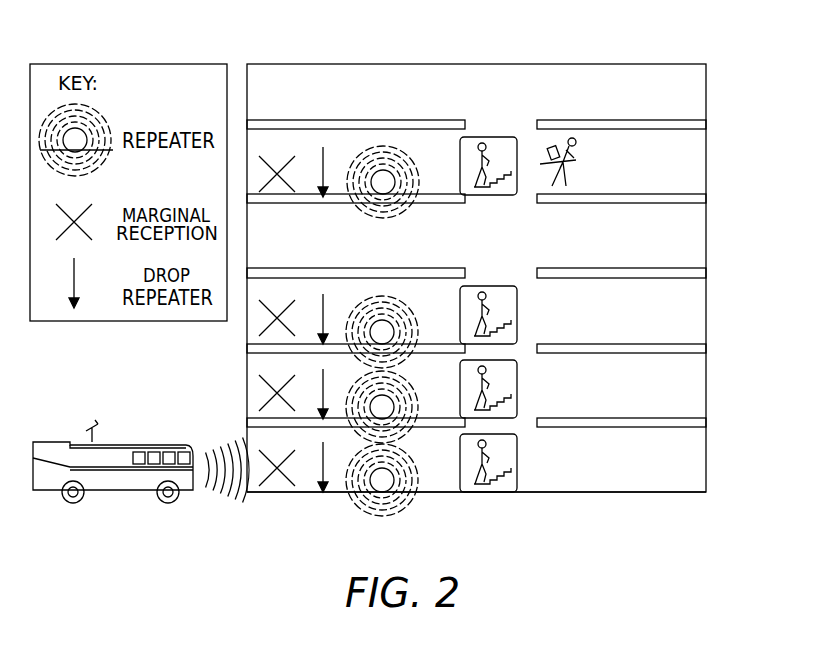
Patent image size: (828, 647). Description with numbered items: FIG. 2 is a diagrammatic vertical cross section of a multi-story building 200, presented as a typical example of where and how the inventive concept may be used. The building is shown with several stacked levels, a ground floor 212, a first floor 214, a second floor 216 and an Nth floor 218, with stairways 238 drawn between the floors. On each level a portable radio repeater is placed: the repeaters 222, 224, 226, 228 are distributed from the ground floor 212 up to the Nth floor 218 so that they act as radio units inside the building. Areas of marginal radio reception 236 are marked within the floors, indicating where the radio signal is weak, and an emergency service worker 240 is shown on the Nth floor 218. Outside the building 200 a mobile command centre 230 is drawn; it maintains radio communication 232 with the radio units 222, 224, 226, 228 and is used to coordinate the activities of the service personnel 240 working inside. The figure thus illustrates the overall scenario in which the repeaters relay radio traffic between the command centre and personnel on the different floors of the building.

The multi-story building 200 is at (660, 42).
The ground floor 212 is at (706, 440).
The first floor 214 is at (706, 366).
The second floor 216 is at (706, 292).
The Nth floor 218 is at (706, 143).
The portable radio repeater 222 is at (386, 514).
The portable radio repeater 224 is at (407, 373).
The portable radio repeater 226 is at (407, 298).
The portable radio repeater 228 is at (385, 222).
The mobile command centre 230 is at (112, 492).
The radio communication 232 is at (222, 496).
The area of marginal radio reception 236 is at (295, 192).
The stairway 238 is at (499, 136).
The emergency service worker 240 is at (590, 146).